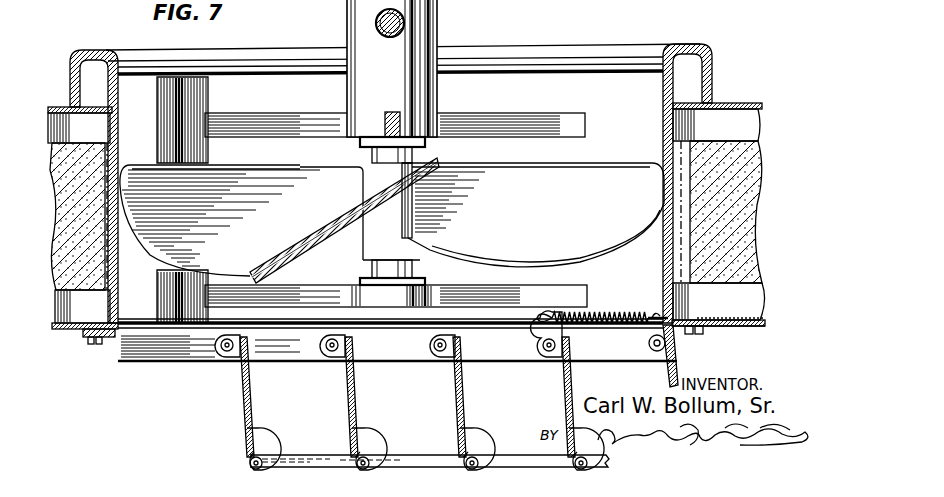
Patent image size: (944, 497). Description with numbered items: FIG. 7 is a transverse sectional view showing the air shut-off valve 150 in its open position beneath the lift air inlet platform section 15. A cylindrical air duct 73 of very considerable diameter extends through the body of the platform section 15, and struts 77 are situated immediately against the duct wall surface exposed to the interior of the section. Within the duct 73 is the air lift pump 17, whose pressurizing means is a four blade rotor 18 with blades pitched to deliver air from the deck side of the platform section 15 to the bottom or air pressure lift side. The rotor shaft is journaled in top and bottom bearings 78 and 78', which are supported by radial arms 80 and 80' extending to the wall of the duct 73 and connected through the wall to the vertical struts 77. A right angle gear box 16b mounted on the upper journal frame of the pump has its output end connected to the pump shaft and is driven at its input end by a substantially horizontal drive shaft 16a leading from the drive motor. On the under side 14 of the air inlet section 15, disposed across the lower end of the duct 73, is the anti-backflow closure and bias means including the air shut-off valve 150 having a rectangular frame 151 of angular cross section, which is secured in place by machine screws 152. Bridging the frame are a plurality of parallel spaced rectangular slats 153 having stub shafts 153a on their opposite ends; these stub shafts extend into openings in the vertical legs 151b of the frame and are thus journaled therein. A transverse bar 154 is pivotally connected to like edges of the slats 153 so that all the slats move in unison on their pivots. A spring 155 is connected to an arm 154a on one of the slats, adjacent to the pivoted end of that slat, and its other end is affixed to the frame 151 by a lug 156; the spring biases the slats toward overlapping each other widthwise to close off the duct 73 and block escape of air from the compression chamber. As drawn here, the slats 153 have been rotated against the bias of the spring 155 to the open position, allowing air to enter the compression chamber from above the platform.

The under side 14 is at (765, 327).
The lift air inlet platform section 15 is at (733, 100).
The drive shaft 16a is at (375, 22).
The right angle gear box 16b is at (428, 34).
The air lift pump 17 is at (684, 40).
The four blade rotor 18 is at (589, 173).
The cylindrical air duct 73 is at (120, 304).
The struts 77 is at (102, 222).
The top bearing 78 is at (416, 150).
The bottom bearing 78' is at (411, 273).
The radial arms 80 is at (402, 74).
The radial arms 80' is at (279, 222).
The air shut-off valve 150 is at (240, 407).
The rectangular frame 151 is at (676, 351).
The vertical legs 151b is at (200, 354).
The machine screws 152 is at (684, 332).
The slats 153 is at (345, 399).
The stub shafts 153a is at (323, 345).
The transverse bar 154 is at (418, 463).
The arm 154a is at (534, 330).
The spring 155 is at (597, 310).
The lug 156 is at (657, 313).